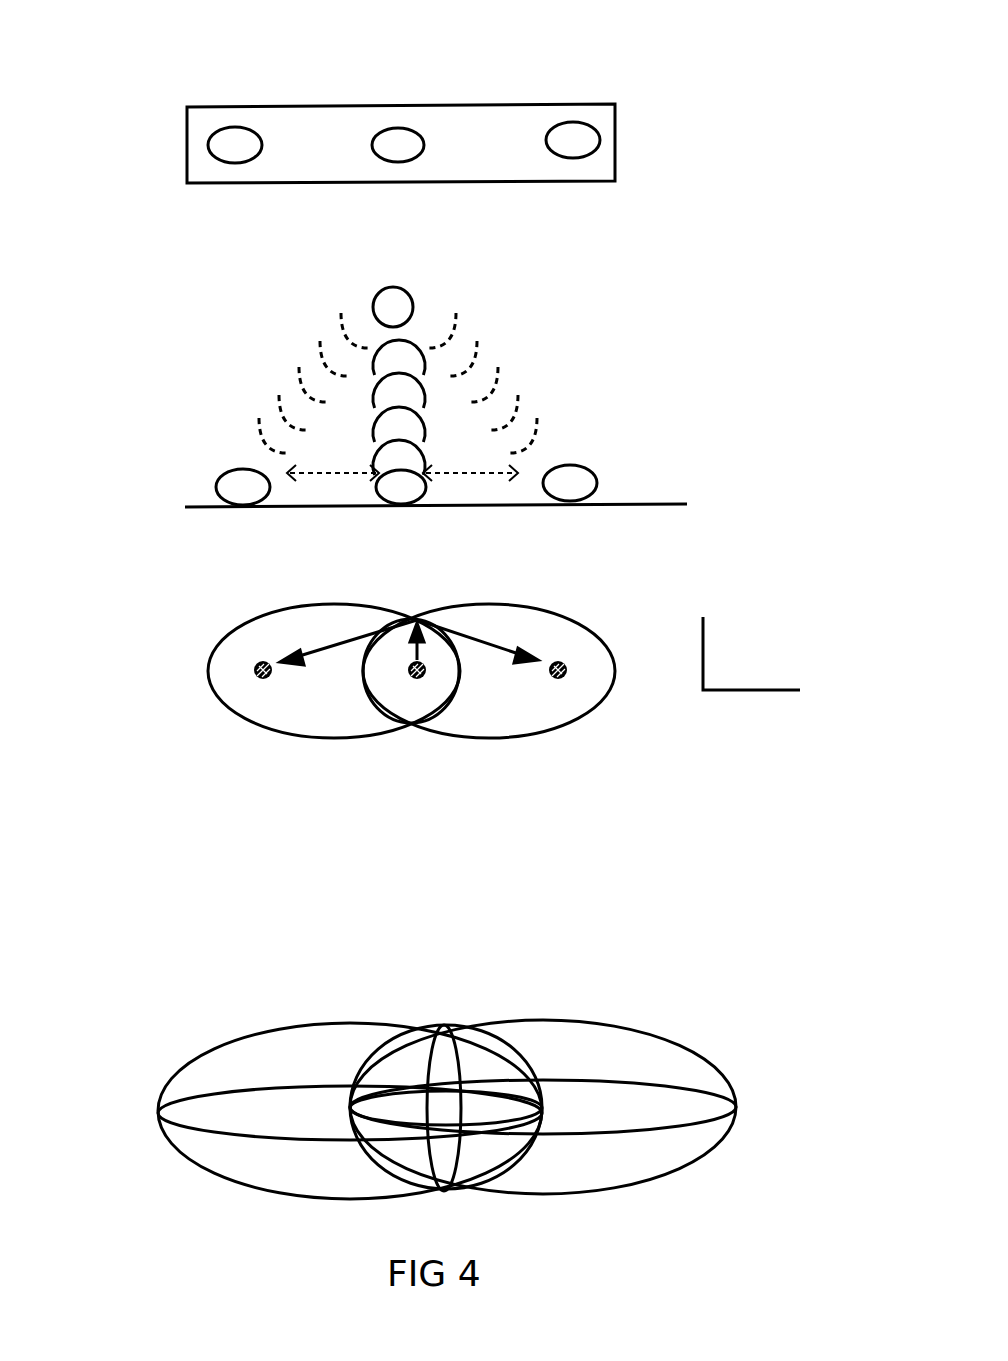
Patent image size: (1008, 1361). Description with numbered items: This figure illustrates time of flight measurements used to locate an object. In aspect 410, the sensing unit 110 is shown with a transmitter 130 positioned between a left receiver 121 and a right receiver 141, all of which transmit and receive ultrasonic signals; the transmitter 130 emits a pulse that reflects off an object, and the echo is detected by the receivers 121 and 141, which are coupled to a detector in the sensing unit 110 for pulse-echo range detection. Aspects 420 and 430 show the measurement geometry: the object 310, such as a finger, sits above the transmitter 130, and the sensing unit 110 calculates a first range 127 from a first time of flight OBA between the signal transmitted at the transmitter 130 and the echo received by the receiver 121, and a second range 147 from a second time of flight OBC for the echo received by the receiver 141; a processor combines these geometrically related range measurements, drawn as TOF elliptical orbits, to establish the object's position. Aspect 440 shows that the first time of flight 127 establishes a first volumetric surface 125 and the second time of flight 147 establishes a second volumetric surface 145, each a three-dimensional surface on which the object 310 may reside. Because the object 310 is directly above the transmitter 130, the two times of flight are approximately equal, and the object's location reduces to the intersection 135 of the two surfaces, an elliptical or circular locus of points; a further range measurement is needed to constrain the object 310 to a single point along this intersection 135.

The sensing unit 110 is at (616, 137).
The left receiver 121 is at (230, 128).
The transmitter 130 is at (400, 127).
The right receiver 141 is at (572, 121).
The object 310 is at (407, 287).
The first range 127 is at (318, 650).
The second range 147 is at (485, 640).
The first volumetric surface 125 is at (215, 1048).
The intersection 135 is at (445, 1027).
The second volumetric surface 145 is at (612, 1020).
The aspect 410 is at (97, 40).
The aspect 420 is at (105, 310).
The aspect 430 is at (118, 623).
The aspect 440 is at (122, 933).